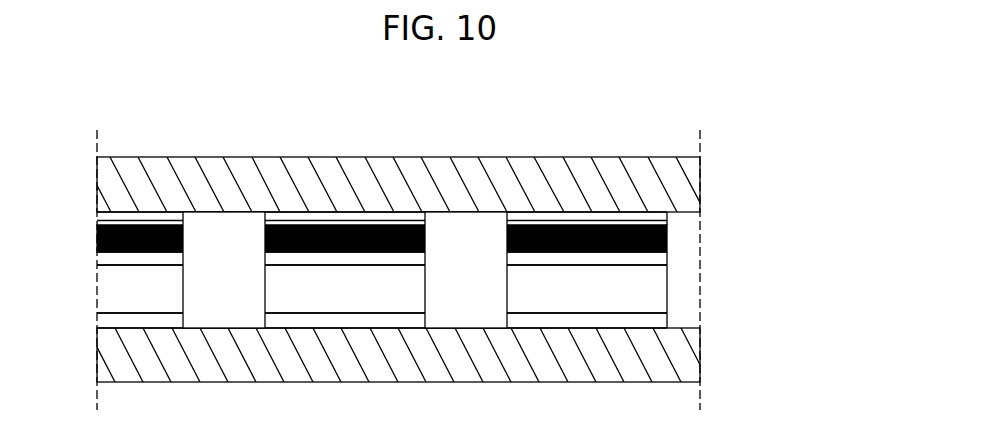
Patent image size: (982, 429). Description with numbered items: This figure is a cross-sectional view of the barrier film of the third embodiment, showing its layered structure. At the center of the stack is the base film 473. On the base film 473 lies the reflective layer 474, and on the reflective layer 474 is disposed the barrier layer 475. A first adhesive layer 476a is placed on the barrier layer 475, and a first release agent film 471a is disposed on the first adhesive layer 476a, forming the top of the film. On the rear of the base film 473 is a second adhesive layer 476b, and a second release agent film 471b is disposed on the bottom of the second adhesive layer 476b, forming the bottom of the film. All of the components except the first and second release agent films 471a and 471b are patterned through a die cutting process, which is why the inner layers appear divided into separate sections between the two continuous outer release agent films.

The first release agent film 471a is at (700, 178).
The first adhesive layer 476a is at (660, 220).
The barrier layer 475 is at (667, 236).
The reflective layer 474 is at (660, 256).
The base film 473 is at (660, 290).
The second adhesive layer 476b is at (660, 318).
The second release agent film 471b is at (700, 358).